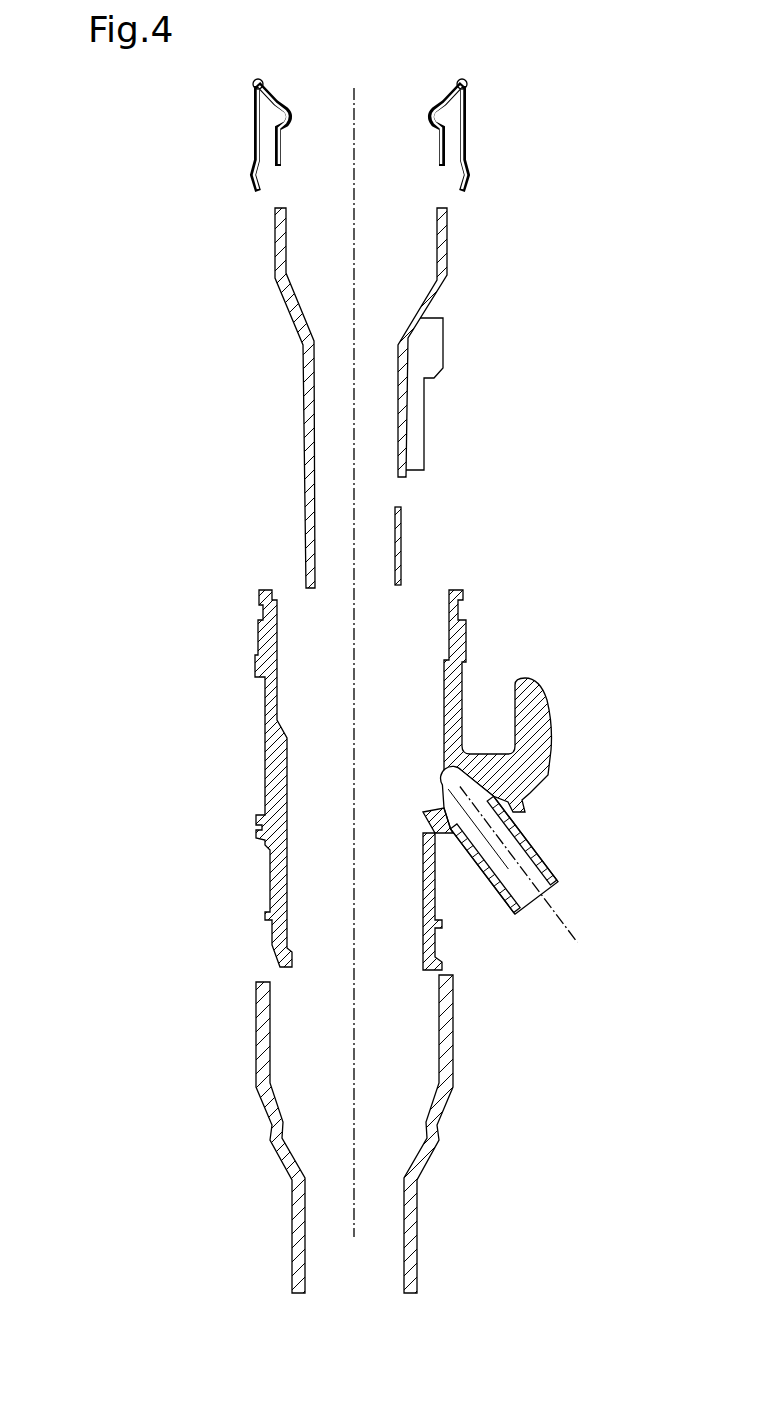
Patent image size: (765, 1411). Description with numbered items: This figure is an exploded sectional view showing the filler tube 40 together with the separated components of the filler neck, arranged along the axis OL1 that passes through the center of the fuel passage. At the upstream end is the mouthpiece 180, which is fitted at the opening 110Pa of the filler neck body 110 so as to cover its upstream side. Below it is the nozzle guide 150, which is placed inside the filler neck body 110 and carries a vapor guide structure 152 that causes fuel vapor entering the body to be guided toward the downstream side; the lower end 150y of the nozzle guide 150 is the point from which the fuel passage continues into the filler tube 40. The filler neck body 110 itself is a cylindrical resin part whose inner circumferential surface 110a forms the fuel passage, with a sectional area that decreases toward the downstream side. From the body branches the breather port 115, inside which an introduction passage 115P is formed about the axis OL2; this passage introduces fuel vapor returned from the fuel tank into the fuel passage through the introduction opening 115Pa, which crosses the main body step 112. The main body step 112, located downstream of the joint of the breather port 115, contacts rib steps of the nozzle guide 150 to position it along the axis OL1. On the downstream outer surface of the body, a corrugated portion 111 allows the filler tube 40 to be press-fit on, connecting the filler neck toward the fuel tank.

The filler tube 40 is at (243, 1019).
The filler neck body 110 is at (231, 657).
The inner circumferential surface 110a is at (286, 807).
The opening 110Pa is at (303, 597).
The corrugated portion 111 is at (272, 926).
The main body step 112 is at (428, 812).
The breather port 115 is at (535, 780).
The introduction passage 115P is at (541, 886).
The introduction opening 115Pa is at (436, 779).
The nozzle guide 150 is at (417, 398).
The lower end 150y is at (379, 592).
The vapor guide structure 152 is at (430, 314).
The mouthpiece 180 is at (494, 138).
The axis OL1 is at (355, 647).
The axis OL2 is at (534, 883).